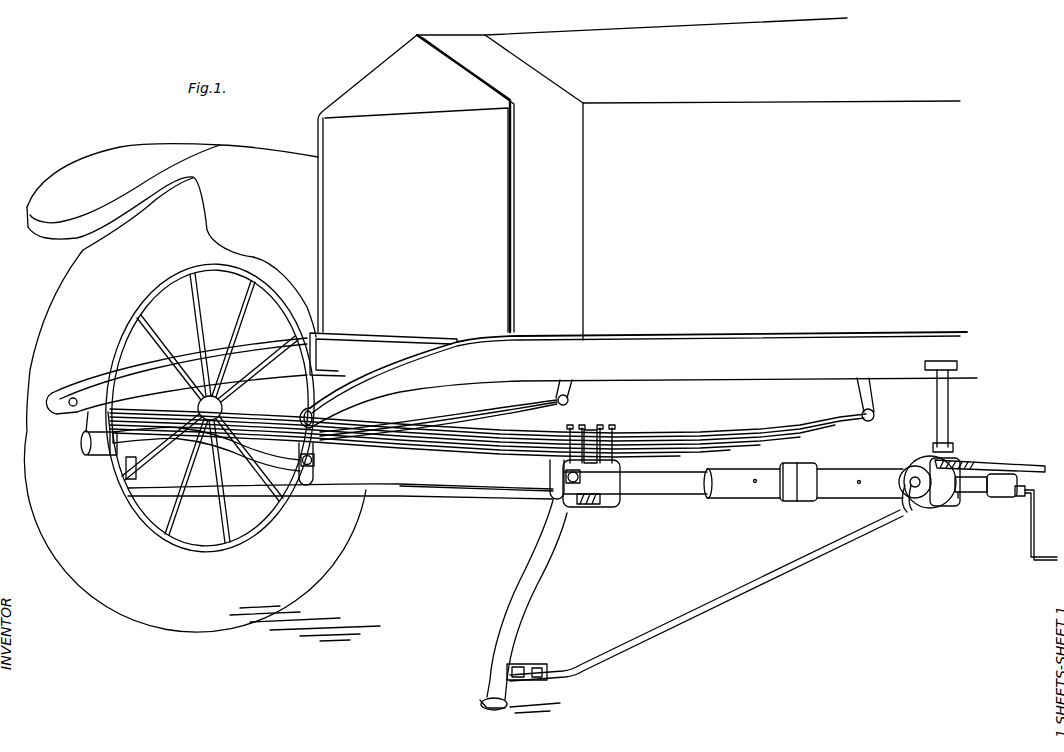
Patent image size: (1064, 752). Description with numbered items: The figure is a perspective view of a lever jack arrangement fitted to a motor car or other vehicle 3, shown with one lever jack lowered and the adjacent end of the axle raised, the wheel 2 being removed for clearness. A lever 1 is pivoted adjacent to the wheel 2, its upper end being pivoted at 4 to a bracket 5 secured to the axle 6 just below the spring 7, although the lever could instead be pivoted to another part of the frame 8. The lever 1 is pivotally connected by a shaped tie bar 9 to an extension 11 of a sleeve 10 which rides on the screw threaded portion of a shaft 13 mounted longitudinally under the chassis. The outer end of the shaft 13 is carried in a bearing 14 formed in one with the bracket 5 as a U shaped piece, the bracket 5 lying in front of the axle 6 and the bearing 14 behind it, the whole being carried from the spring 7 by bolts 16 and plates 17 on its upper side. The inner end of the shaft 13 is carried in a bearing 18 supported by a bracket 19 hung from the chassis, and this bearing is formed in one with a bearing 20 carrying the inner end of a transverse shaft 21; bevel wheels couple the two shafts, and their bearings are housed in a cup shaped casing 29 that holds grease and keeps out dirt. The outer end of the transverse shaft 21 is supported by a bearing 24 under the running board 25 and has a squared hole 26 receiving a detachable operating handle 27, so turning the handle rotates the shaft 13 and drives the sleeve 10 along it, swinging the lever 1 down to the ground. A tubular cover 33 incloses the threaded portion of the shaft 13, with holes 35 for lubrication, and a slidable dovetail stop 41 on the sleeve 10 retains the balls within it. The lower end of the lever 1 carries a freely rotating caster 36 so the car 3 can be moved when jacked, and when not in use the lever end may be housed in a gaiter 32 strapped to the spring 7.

The lever 1 is at (177, 455).
The wheel 2 is at (338, 528).
The vehicle 3 is at (635, 197).
The pivot 4 is at (314, 460).
The bracket 5 is at (306, 485).
The axle 6 is at (465, 488).
The spring 7 is at (416, 418).
The frame 8 is at (511, 380).
The tie bar 9 is at (333, 496).
The sleeve 10 is at (805, 501).
The extension 11 is at (907, 466).
The shaft 13 is at (676, 494).
The bearing 14 is at (620, 508).
The bolts 16 is at (590, 428).
The plates 17 is at (570, 427).
The bearing 18 is at (908, 513).
The bracket 19 is at (948, 398).
The bearing 20 is at (968, 493).
The transverse shaft 21 is at (982, 497).
The bearing 24 is at (1000, 498).
The running board 25 is at (1013, 462).
The squared hole 26 is at (1020, 497).
The operating handle 27 is at (1035, 528).
The casing 29 is at (940, 508).
The gaiter 32 is at (88, 454).
The tubular covers 33 is at (726, 497).
The holes 35 is at (756, 486).
The caster 36 is at (486, 705).
The stop 41 is at (805, 458).